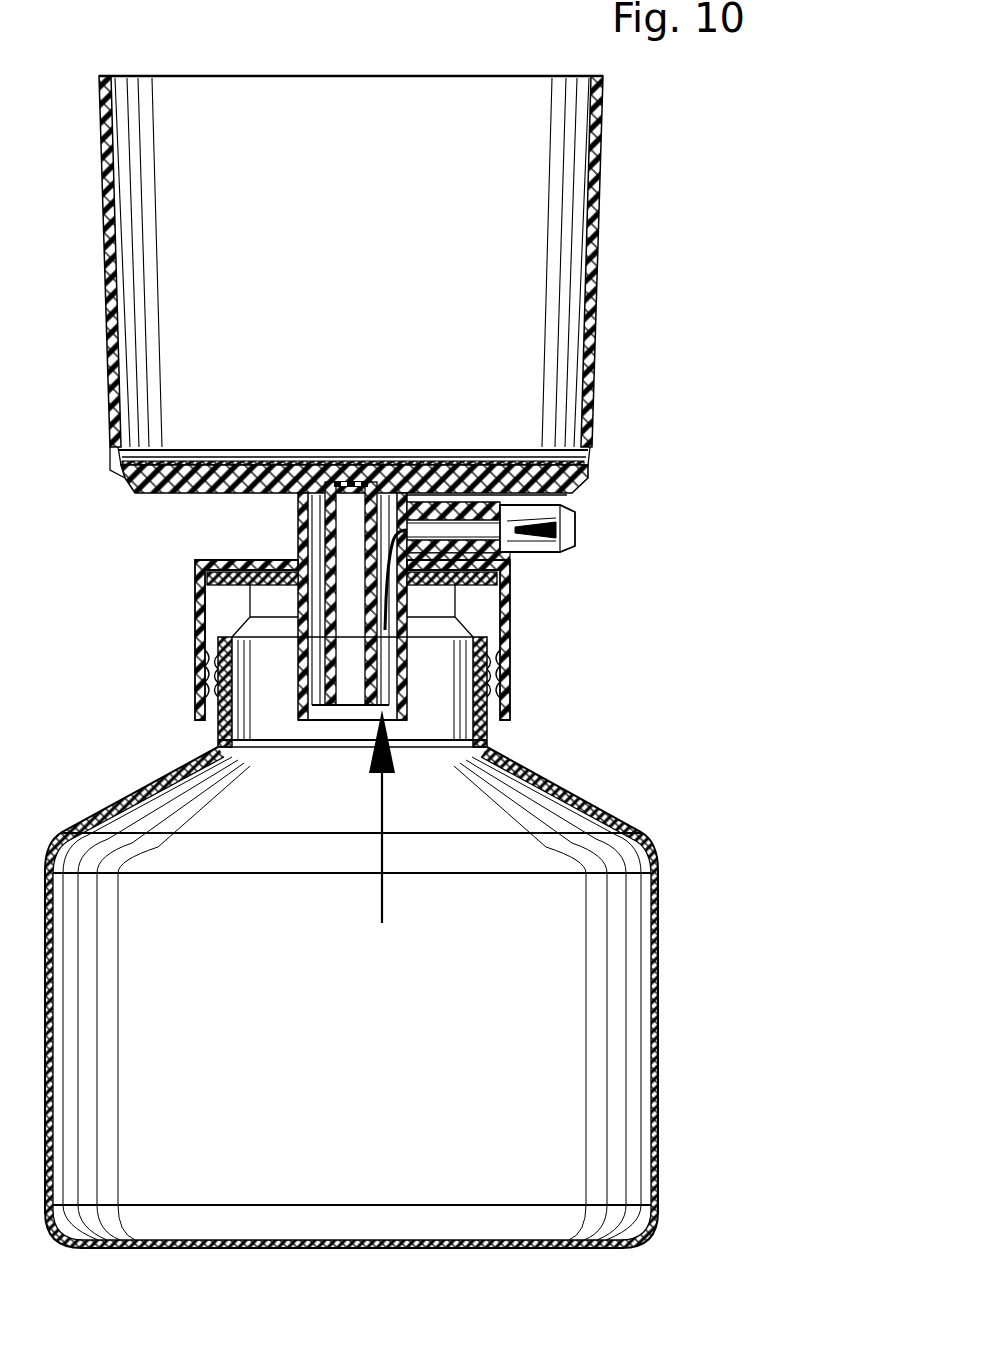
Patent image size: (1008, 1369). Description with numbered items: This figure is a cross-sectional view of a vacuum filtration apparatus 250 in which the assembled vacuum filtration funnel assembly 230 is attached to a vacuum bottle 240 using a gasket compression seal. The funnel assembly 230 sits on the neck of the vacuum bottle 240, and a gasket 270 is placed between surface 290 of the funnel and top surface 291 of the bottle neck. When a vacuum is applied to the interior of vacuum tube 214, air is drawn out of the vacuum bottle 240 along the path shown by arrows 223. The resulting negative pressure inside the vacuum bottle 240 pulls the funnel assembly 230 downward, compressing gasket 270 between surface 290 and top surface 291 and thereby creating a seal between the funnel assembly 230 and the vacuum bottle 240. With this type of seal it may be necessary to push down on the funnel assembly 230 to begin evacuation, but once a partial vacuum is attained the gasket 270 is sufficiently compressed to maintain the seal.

The vacuum filtration funnel assembly 230 is at (608, 240).
The arrows 223 is at (563, 518).
The vacuum tube 214 is at (562, 555).
The surface 290 is at (250, 565).
The top surface of the neck 291 is at (247, 587).
The gasket 270 is at (495, 580).
The vacuum bottle 240 is at (668, 1040).
The filtration assembly 250 is at (792, 1215).